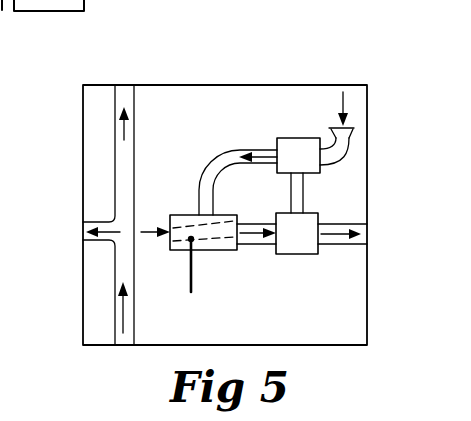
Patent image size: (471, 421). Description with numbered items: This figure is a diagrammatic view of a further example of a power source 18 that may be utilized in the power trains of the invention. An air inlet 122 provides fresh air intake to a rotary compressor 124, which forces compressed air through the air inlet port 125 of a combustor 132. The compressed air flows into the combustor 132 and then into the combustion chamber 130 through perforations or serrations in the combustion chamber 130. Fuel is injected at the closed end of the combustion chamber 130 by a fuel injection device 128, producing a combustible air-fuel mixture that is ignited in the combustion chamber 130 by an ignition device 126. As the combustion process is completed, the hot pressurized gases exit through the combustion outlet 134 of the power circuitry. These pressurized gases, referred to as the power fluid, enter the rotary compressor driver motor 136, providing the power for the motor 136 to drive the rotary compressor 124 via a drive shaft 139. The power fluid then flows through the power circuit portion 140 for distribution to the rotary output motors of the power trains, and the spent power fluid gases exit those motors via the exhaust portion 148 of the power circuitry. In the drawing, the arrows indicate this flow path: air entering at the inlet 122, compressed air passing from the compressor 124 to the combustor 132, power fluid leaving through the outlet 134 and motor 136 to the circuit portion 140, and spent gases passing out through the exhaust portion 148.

The power source 18 is at (298, 71).
The air inlet 122 is at (335, 127).
The rotary compressor 124 is at (281, 137).
The air inlet port 125 is at (215, 164).
The ignition device 126 is at (188, 290).
The fuel injection device 128 is at (152, 228).
The combustion chamber 130 is at (223, 233).
The combustor 132 is at (215, 252).
The combustion outlet 134 is at (270, 244).
The rotary compressor driver motor 136 is at (311, 213).
The drive shaft 139 is at (291, 187).
The power circuit portion 140 is at (365, 229).
The exhaust portion 148 is at (86, 233).